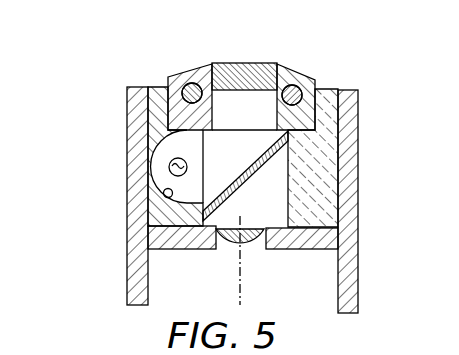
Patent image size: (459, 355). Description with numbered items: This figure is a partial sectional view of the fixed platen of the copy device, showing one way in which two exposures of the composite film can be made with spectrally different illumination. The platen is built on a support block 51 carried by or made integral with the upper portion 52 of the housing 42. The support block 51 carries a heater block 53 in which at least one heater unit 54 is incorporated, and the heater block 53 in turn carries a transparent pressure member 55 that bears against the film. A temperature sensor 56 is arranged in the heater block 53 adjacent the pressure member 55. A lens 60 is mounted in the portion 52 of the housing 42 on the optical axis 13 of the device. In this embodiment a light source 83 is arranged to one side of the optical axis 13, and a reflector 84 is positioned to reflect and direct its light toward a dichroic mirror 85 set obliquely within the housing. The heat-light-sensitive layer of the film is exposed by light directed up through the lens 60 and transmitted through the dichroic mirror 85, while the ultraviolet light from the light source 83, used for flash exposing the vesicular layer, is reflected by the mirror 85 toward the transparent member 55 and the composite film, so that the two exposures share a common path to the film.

The optical axis 13 is at (240, 285).
The housing 42 is at (348, 271).
The support block 51 is at (322, 145).
The upper portion of the housing 52 is at (143, 220).
The heater block 53 is at (178, 110).
The heater unit 54 is at (192, 86).
The transparent pressure member 55 is at (246, 66).
The temperature sensor 56 is at (291, 88).
The lens 60 is at (257, 243).
The light source 83 is at (170, 163).
The reflector 84 is at (158, 250).
The dichroic mirror 85 is at (240, 179).